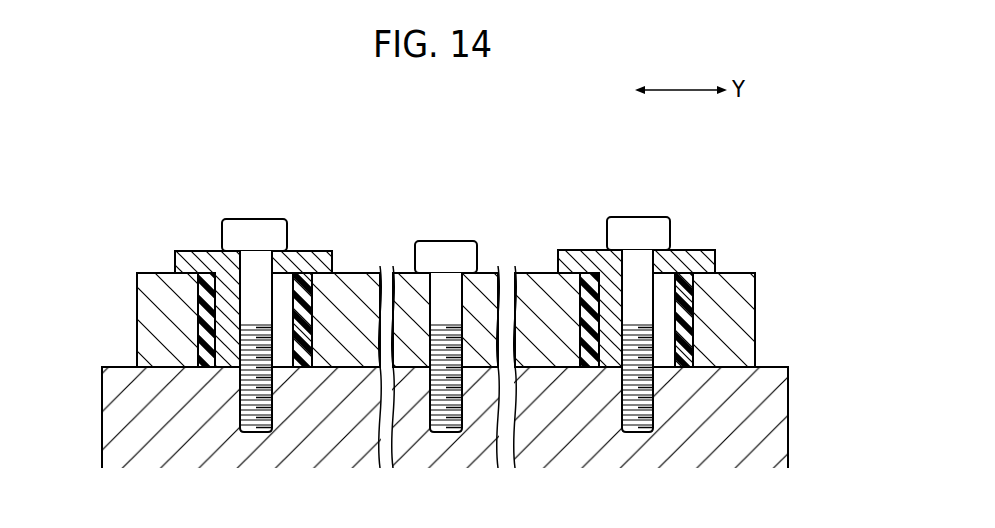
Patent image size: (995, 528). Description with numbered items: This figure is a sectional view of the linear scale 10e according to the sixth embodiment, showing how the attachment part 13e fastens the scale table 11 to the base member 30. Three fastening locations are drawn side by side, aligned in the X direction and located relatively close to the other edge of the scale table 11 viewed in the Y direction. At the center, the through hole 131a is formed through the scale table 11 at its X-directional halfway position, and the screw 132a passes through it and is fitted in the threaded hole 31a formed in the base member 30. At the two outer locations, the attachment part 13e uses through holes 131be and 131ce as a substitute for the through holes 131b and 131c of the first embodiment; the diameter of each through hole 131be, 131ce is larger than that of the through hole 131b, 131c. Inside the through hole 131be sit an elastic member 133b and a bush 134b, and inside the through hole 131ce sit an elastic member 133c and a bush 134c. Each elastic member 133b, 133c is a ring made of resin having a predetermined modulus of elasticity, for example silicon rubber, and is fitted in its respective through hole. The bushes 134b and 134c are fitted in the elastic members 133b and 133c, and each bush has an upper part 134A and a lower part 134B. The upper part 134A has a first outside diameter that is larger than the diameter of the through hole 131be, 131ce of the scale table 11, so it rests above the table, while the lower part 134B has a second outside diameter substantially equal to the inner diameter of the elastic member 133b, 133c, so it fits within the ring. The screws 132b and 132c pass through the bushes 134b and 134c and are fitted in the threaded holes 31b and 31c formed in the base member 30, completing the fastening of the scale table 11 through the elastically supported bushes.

The linear scale 10e is at (220, 104).
The attachment part 13e is at (722, 141).
The scale table 11 is at (743, 355).
The base member 30 is at (773, 410).
The through hole 131a is at (433, 303).
The through hole 131b is at (346, 320).
The through hole 131c is at (547, 320).
The through hole 131be is at (203, 305).
The through hole 131ce is at (685, 297).
The screw 132a is at (430, 248).
The screw 132b is at (237, 223).
The screw 132c is at (645, 225).
The elastic member 133b is at (204, 278).
The elastic member 133c is at (684, 280).
The bush 134b is at (400, 254).
The bush 134c is at (630, 178).
The upper part 134A is at (320, 262).
The lower part 134B is at (357, 178).
The threaded hole 31a is at (444, 434).
The threaded hole 31b is at (257, 434).
The threaded hole 31c is at (635, 432).